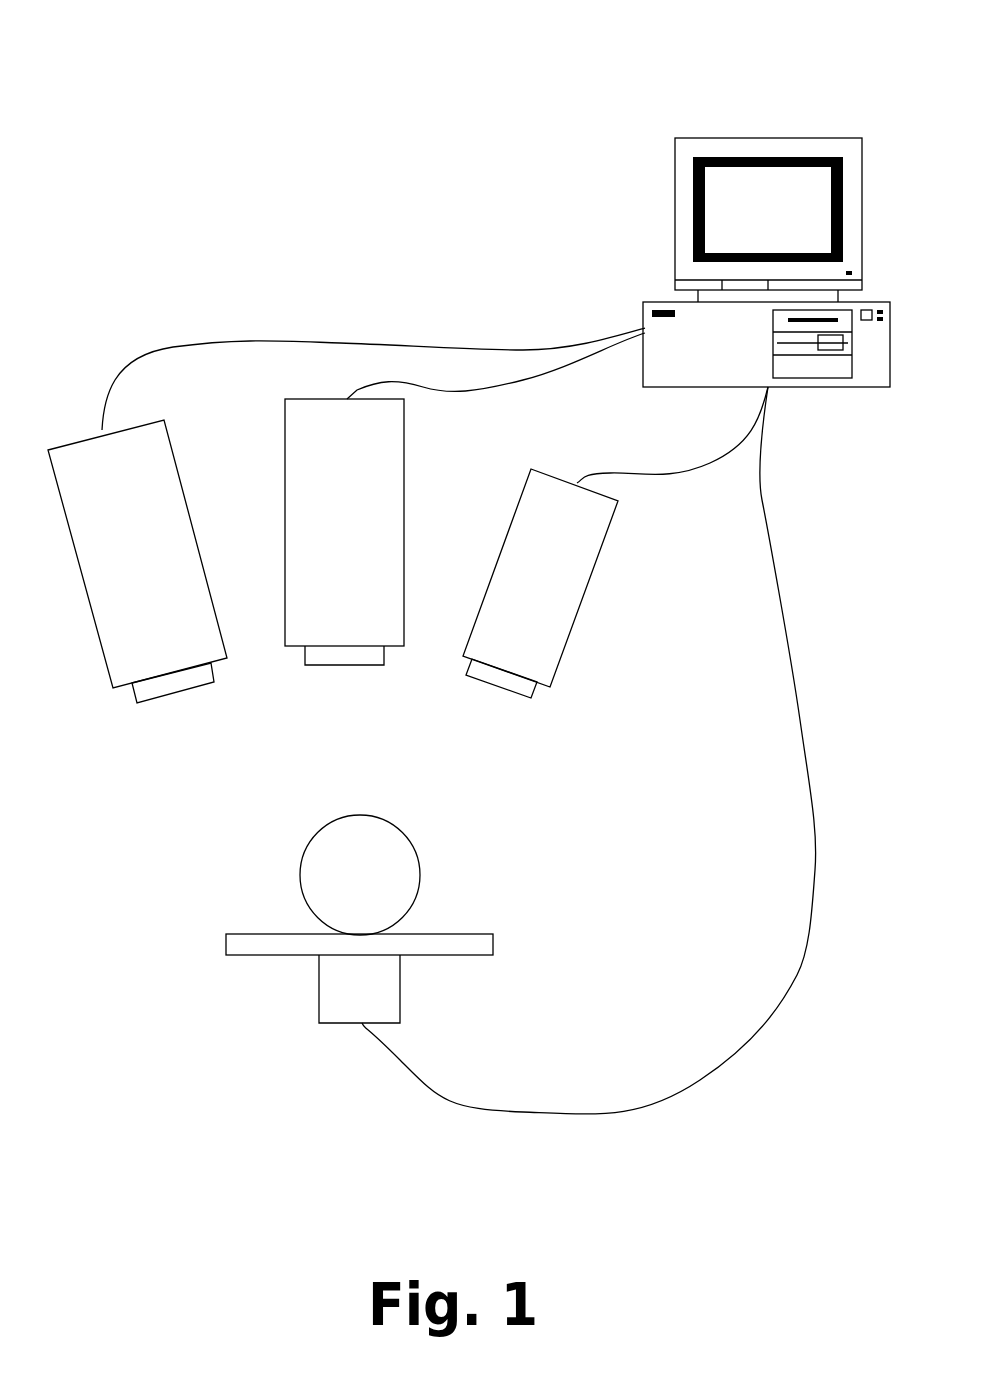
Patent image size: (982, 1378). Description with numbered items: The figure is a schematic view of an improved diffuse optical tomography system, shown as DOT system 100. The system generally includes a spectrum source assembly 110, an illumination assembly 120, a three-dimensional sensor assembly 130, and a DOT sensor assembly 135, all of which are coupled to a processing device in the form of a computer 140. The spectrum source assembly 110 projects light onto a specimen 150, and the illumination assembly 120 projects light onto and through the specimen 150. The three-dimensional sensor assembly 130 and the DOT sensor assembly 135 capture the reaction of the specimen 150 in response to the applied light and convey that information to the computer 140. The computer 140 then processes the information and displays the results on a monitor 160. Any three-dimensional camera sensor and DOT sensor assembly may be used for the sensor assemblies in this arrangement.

The DOT system 100 is at (349, 136).
The spectrum source assembly 110 is at (563, 597).
The illumination assembly 120 is at (319, 987).
The 3D sensor assembly 130 is at (109, 580).
The DOT sensor assembly 135 is at (321, 543).
The computer 140 is at (628, 118).
The specimen 150 is at (420, 875).
The monitor 160 is at (745, 220).